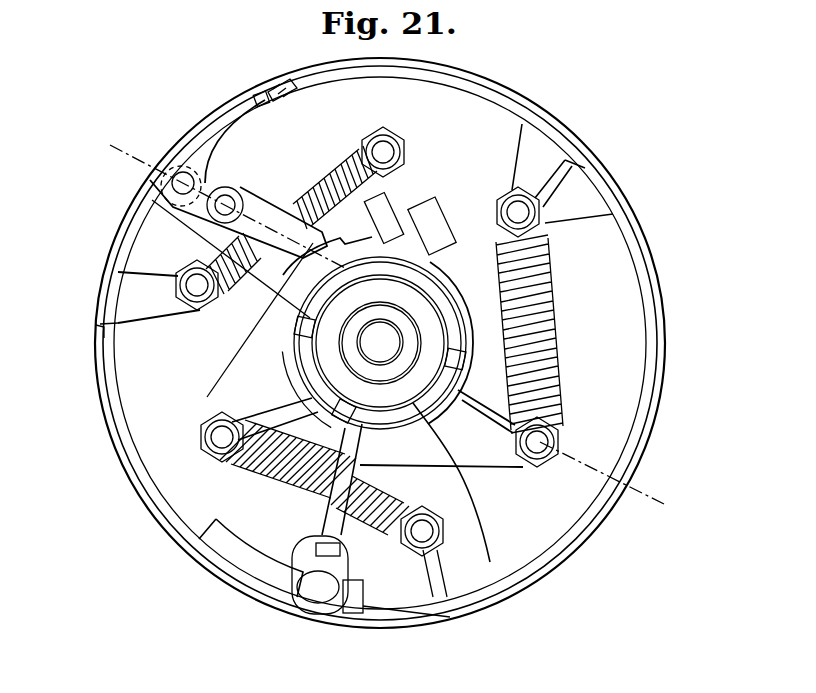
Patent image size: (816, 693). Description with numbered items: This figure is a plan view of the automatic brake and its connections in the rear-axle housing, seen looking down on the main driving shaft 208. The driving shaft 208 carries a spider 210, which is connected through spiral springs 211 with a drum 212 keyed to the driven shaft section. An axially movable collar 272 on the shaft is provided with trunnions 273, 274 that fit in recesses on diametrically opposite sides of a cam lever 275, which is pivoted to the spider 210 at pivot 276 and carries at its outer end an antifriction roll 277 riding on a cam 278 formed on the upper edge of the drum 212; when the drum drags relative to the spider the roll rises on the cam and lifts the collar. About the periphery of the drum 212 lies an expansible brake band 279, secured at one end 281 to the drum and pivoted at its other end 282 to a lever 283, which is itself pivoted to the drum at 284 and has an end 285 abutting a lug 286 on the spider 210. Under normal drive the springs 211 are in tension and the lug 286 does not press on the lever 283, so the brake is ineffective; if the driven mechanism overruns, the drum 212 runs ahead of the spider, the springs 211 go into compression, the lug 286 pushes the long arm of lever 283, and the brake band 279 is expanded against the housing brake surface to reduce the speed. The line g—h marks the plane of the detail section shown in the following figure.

The main driving shaft 208 is at (546, 290).
The spider 210 is at (456, 257).
The spiral springs 211 is at (318, 180).
The drum 212 is at (648, 318).
The collar 272 is at (447, 497).
The trunnion 273 is at (305, 318).
The trunnion 274 is at (450, 370).
The cam lever 275 is at (323, 403).
The pivot 276 is at (410, 215).
The antifriction roll 277 is at (318, 588).
The cam 278 is at (243, 568).
The expansible brake band 279 is at (482, 607).
The brake band securing point 281 is at (98, 332).
The brake band pivot 282 is at (181, 178).
The lever 283 is at (213, 232).
The lever pivot 284 is at (229, 204).
The lever end 285 is at (250, 323).
The lug 286 is at (383, 205).
The section line g is at (216, 200).
The section line h is at (614, 480).